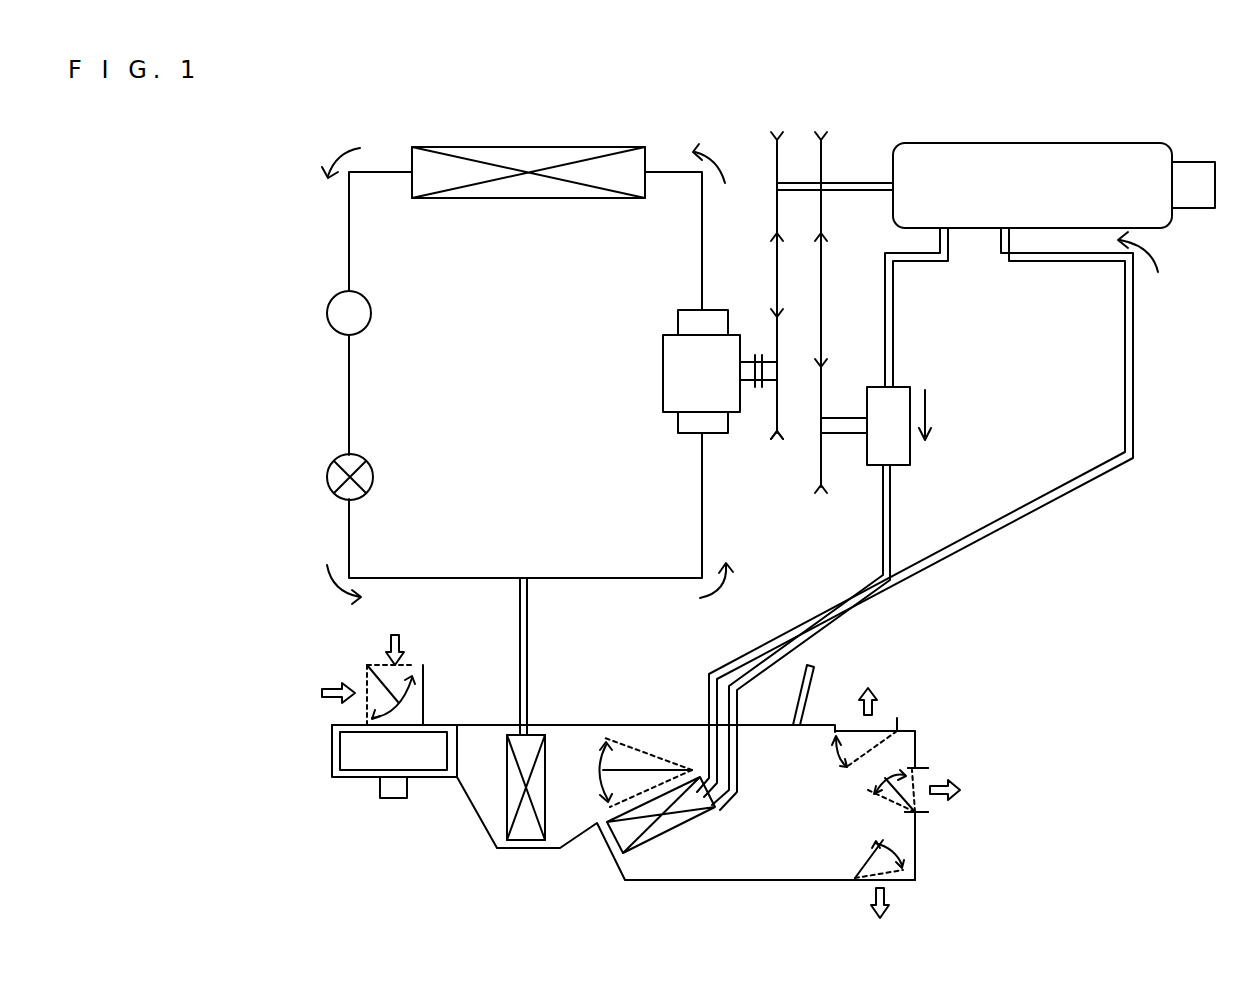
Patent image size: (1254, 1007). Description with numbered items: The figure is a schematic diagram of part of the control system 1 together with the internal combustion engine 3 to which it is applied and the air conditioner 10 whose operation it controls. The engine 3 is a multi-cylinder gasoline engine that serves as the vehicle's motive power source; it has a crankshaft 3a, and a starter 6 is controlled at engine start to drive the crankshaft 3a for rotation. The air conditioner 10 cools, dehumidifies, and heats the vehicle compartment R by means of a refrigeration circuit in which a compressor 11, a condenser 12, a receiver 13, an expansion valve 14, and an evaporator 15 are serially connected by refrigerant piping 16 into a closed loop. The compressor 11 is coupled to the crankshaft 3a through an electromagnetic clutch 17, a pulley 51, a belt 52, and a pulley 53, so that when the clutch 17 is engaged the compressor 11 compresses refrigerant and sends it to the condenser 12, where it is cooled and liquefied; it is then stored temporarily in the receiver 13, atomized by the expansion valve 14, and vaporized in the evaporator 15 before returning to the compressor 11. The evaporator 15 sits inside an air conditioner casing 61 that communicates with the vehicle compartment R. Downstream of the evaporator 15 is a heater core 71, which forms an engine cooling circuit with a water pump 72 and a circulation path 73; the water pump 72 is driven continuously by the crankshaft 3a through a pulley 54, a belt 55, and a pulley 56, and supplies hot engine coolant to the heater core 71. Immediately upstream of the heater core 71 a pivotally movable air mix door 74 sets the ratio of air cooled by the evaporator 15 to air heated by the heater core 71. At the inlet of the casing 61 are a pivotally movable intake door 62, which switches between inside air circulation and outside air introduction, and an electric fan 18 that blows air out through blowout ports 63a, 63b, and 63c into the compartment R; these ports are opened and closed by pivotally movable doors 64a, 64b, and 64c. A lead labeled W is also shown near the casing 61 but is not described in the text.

The control system 1 is at (884, 78).
The air conditioner 10 is at (662, 122).
The condenser 12 is at (536, 147).
The receiver 13 is at (332, 297).
The expansion valve 14 is at (334, 460).
The compressor 11 is at (663, 372).
The electromagnetic clutch 17 is at (756, 353).
The pulley 53 is at (777, 138).
The belt 52 is at (777, 270).
The pulley 51 is at (777, 436).
The pulley 56 is at (821, 138).
The belt 55 is at (824, 300).
The pulley 54 is at (824, 396).
The crankshaft 3a is at (866, 183).
The internal combustion engine 3 is at (978, 143).
The starter 6 is at (1196, 162).
The water pump 72 is at (906, 470).
The circulation path 73 is at (1103, 463).
The heater core 71 is at (672, 832).
The refrigerant piping 16 is at (628, 576).
The evaporator 15 is at (506, 808).
The electric fan 18 is at (332, 748).
The air conditioner casing 61 is at (490, 724).
The intake door 62 is at (398, 688).
The air mix door 74 is at (636, 766).
The wire harness W is at (796, 704).
The blowout port 63a is at (844, 728).
The door 64a is at (900, 727).
The door 64b is at (905, 780).
The blowout port 63b is at (930, 812).
The door 64c is at (862, 866).
The blowout port 63c is at (898, 884).
The vehicle compartment R is at (1096, 788).